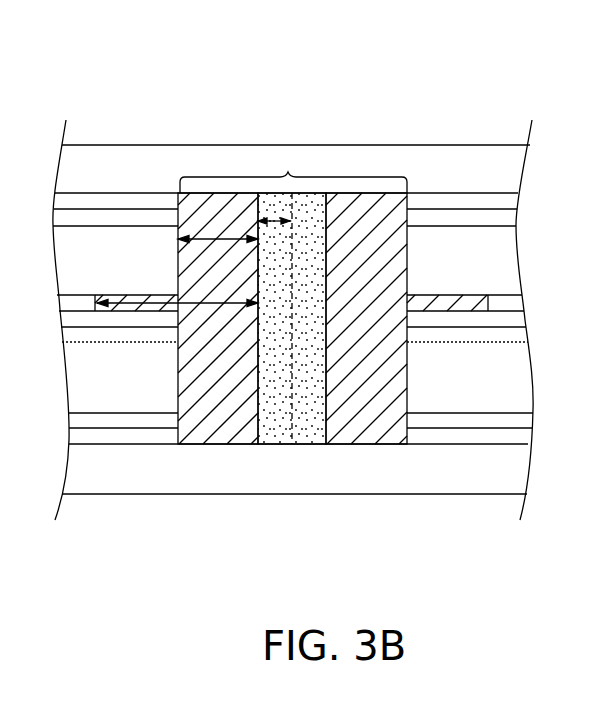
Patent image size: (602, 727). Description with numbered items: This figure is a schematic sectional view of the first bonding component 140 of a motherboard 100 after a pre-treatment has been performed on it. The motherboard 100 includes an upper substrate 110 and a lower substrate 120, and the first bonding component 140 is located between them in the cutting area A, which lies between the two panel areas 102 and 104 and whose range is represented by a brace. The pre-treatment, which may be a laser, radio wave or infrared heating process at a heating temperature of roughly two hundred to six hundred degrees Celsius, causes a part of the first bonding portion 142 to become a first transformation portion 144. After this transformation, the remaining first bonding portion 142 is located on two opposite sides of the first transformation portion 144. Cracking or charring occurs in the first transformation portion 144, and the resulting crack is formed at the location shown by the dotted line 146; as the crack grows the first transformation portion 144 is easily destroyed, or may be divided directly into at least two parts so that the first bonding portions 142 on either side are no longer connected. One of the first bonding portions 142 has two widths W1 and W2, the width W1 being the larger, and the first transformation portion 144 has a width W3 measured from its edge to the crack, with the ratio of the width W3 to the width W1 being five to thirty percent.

The motherboard 100 is at (65, 29).
The panel area 102 is at (110, 145).
The panel area 104 is at (493, 144).
The upper substrate 110 is at (538, 145).
The lower substrate 120 is at (538, 312).
The first bonding component 140 is at (413, 546).
The first bonding portion 142 is at (372, 435).
The first transformation portion 144 is at (275, 435).
The dotted line 146 is at (290, 362).
The cutting area A is at (293, 171).
The width W1 is at (135, 303).
The width W2 is at (218, 239).
The width W3 is at (277, 220).